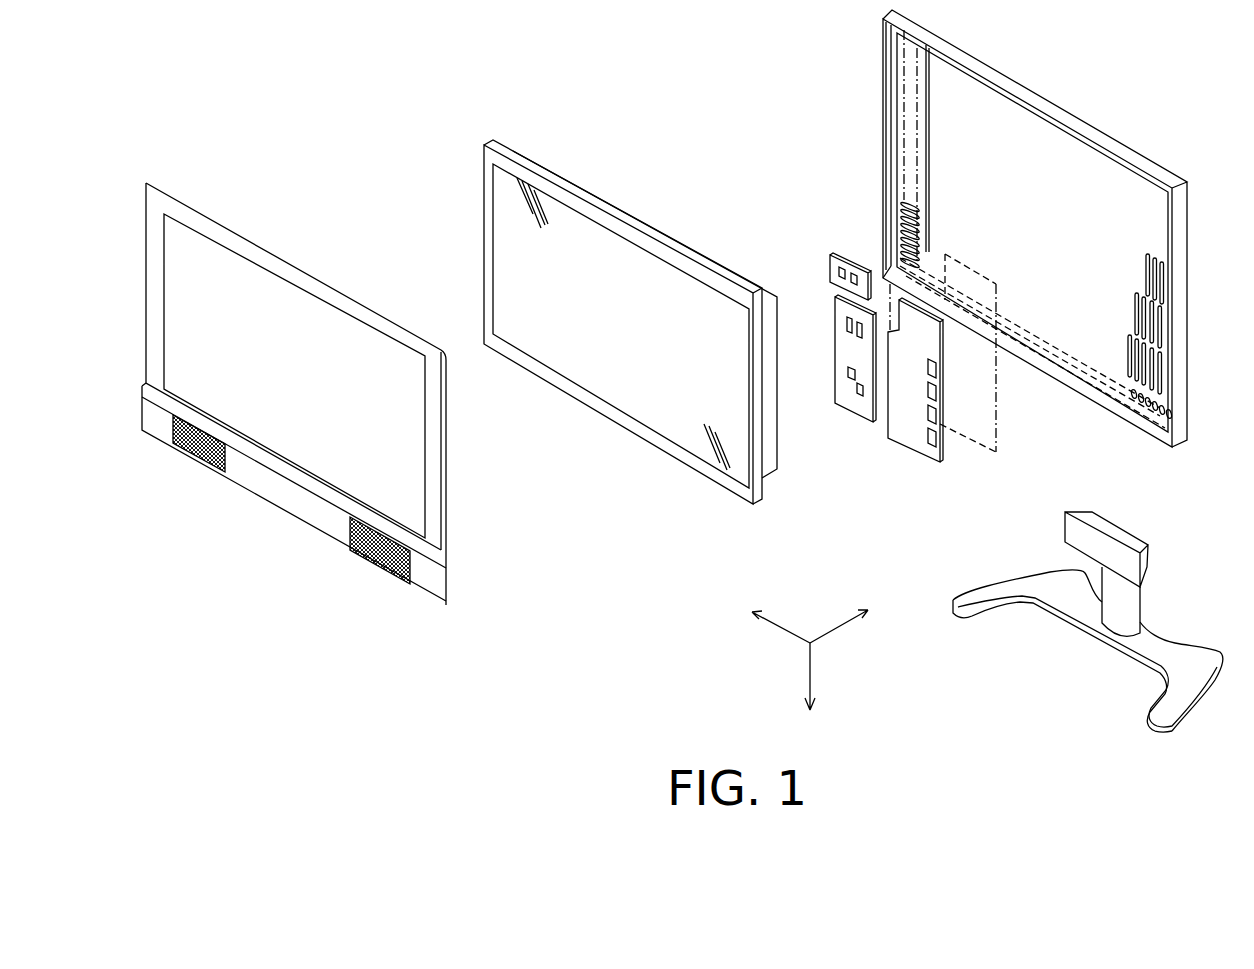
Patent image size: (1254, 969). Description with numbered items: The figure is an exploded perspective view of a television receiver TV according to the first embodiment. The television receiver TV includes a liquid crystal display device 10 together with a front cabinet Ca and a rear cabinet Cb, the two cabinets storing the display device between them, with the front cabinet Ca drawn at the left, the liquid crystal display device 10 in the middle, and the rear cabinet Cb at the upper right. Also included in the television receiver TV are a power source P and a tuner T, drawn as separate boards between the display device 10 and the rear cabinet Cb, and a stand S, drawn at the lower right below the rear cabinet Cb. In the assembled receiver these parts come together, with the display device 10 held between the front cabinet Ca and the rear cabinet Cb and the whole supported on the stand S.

The television receiver TV is at (648, 78).
The front cabinet Ca is at (278, 257).
The liquid crystal display device 10 is at (580, 183).
The rear cabinet Cb is at (1030, 87).
The tuner T is at (847, 410).
The power source P is at (905, 455).
The stand S is at (1008, 608).